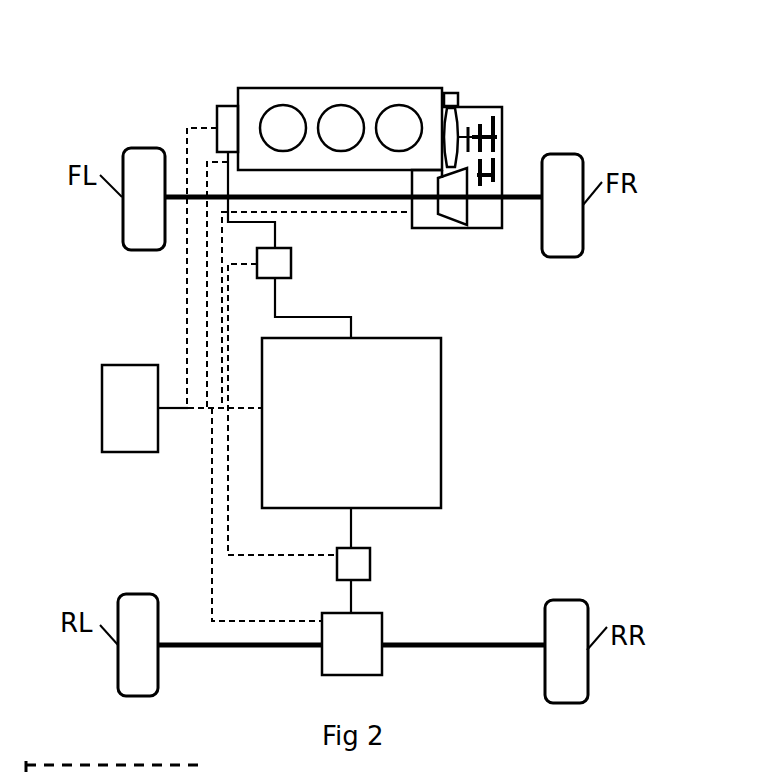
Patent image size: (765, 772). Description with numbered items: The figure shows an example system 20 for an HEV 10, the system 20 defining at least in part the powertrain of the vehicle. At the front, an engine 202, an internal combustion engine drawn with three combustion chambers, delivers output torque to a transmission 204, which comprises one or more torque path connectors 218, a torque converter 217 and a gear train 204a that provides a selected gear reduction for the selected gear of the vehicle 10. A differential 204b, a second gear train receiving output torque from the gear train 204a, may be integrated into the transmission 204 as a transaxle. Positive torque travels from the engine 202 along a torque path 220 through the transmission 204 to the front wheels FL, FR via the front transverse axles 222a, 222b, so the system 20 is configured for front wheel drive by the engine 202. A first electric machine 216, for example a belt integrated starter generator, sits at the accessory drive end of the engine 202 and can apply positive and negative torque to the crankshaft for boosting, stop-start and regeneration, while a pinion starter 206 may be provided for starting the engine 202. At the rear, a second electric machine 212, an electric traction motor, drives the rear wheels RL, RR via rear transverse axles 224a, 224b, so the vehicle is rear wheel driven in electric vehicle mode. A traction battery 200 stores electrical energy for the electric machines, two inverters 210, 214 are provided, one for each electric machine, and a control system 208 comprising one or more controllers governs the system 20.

The HEV 10 is at (606, 31).
The system 20 is at (561, 99).
The traction battery 200 is at (441, 425).
The engine 202 is at (310, 88).
The transmission 204 is at (472, 107).
The gear train 204a is at (495, 143).
The differential 204b is at (467, 210).
The pinion starter 206 is at (449, 93).
The control system 208 is at (102, 405).
The inverter 210 is at (370, 563).
The second electric machine 212 is at (382, 663).
The inverter 214 is at (291, 265).
The first electric machine 216 is at (228, 106).
The torque converter 217 is at (457, 106).
The torque path connectors 218 is at (477, 120).
The torque path 220 is at (387, 204).
The first axle 222a is at (179, 200).
The first axle 222b is at (523, 202).
The rear transverse axle 224a is at (198, 642).
The rear transverse axle 224b is at (480, 642).